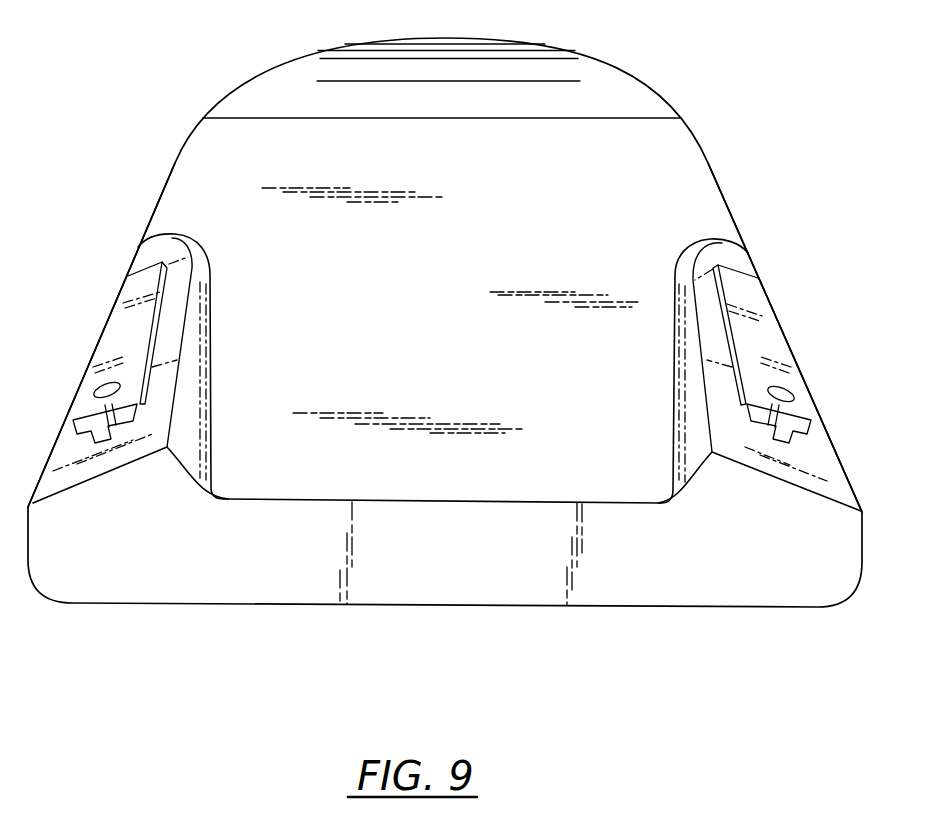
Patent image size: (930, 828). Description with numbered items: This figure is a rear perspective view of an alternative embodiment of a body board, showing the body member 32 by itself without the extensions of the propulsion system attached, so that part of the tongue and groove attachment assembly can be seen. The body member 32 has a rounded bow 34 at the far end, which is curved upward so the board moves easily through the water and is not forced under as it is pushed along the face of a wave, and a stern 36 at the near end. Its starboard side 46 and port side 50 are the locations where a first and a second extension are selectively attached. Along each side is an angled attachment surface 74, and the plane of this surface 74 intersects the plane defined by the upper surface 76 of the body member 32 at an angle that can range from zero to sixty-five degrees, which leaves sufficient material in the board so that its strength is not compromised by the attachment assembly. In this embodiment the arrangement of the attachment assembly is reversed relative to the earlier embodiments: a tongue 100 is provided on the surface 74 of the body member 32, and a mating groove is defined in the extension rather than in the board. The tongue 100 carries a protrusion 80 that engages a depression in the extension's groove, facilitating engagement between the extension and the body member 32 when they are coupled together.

The body member 32 is at (445, 287).
The bow 34 is at (437, 60).
The stern 36 is at (463, 596).
The starboard side 46 is at (703, 192).
The port side 50 is at (182, 192).
The surface 74 is at (730, 256).
The upper surface 76 is at (675, 160).
The protrusion 80 is at (784, 396).
The tongue 100 is at (763, 342).